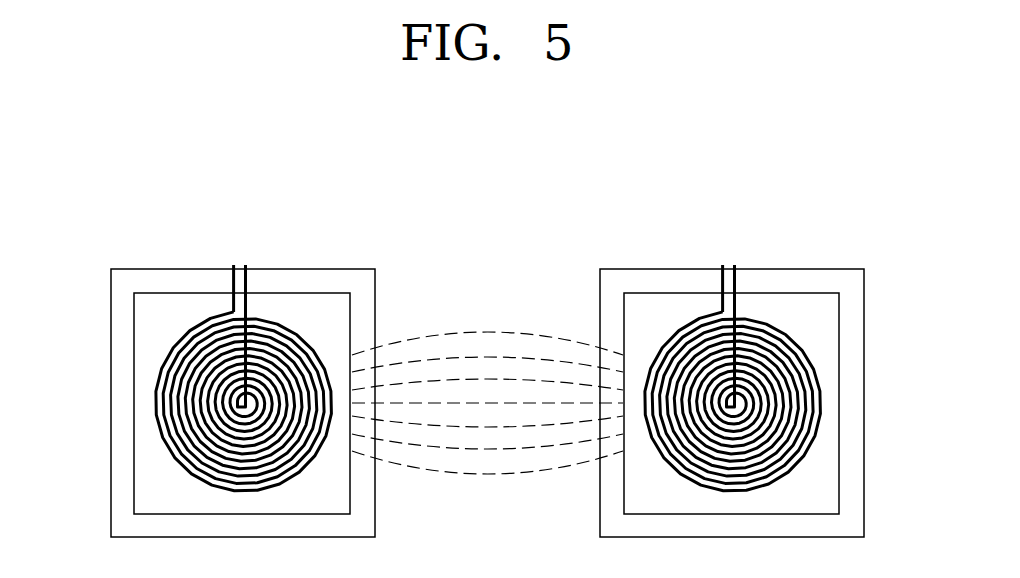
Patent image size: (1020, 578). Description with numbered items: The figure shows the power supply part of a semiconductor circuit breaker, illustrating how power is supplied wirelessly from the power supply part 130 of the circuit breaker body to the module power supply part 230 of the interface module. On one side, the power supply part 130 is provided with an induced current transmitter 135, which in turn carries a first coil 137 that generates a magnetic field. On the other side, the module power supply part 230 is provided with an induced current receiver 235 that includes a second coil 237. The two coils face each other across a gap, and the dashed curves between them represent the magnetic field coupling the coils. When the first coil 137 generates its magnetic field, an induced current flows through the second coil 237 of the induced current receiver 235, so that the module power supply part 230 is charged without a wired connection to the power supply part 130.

The power supply part 130 is at (864, 305).
The induced current transmitter 135 is at (839, 360).
The first coil 137 is at (826, 405).
The module power supply part 230 is at (111, 308).
The induced current receiver 235 is at (134, 362).
The second coil 237 is at (151, 408).